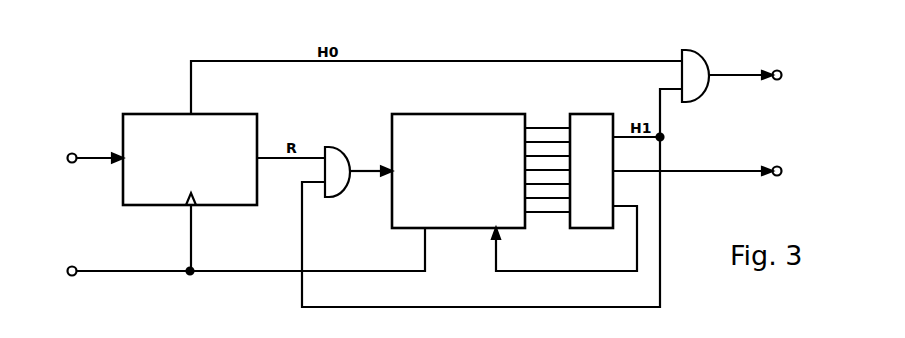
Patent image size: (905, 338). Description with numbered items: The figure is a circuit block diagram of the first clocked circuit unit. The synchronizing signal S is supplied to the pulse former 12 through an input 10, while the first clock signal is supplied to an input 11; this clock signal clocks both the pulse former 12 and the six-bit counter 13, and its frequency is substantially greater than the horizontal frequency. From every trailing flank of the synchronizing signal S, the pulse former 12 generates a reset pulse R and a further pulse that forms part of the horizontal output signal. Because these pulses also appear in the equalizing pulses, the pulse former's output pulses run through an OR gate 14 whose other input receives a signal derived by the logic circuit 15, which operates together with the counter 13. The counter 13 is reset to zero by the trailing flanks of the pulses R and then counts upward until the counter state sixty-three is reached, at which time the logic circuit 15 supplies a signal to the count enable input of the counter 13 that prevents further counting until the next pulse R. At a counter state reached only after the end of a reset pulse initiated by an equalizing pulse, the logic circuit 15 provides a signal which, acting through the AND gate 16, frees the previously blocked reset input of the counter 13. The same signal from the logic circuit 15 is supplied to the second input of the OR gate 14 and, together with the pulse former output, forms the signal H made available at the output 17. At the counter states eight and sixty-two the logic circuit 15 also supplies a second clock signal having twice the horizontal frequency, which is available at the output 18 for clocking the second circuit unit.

The input 10 is at (87, 149).
The input 11 is at (68, 260).
The pulse former 12 is at (194, 148).
The 6-bit counter 13 is at (462, 160).
The OR gate 14 is at (707, 70).
The logic circuit 15 is at (598, 160).
The AND gate 16 is at (345, 162).
The output 17 is at (755, 66).
The output 18 is at (710, 161).